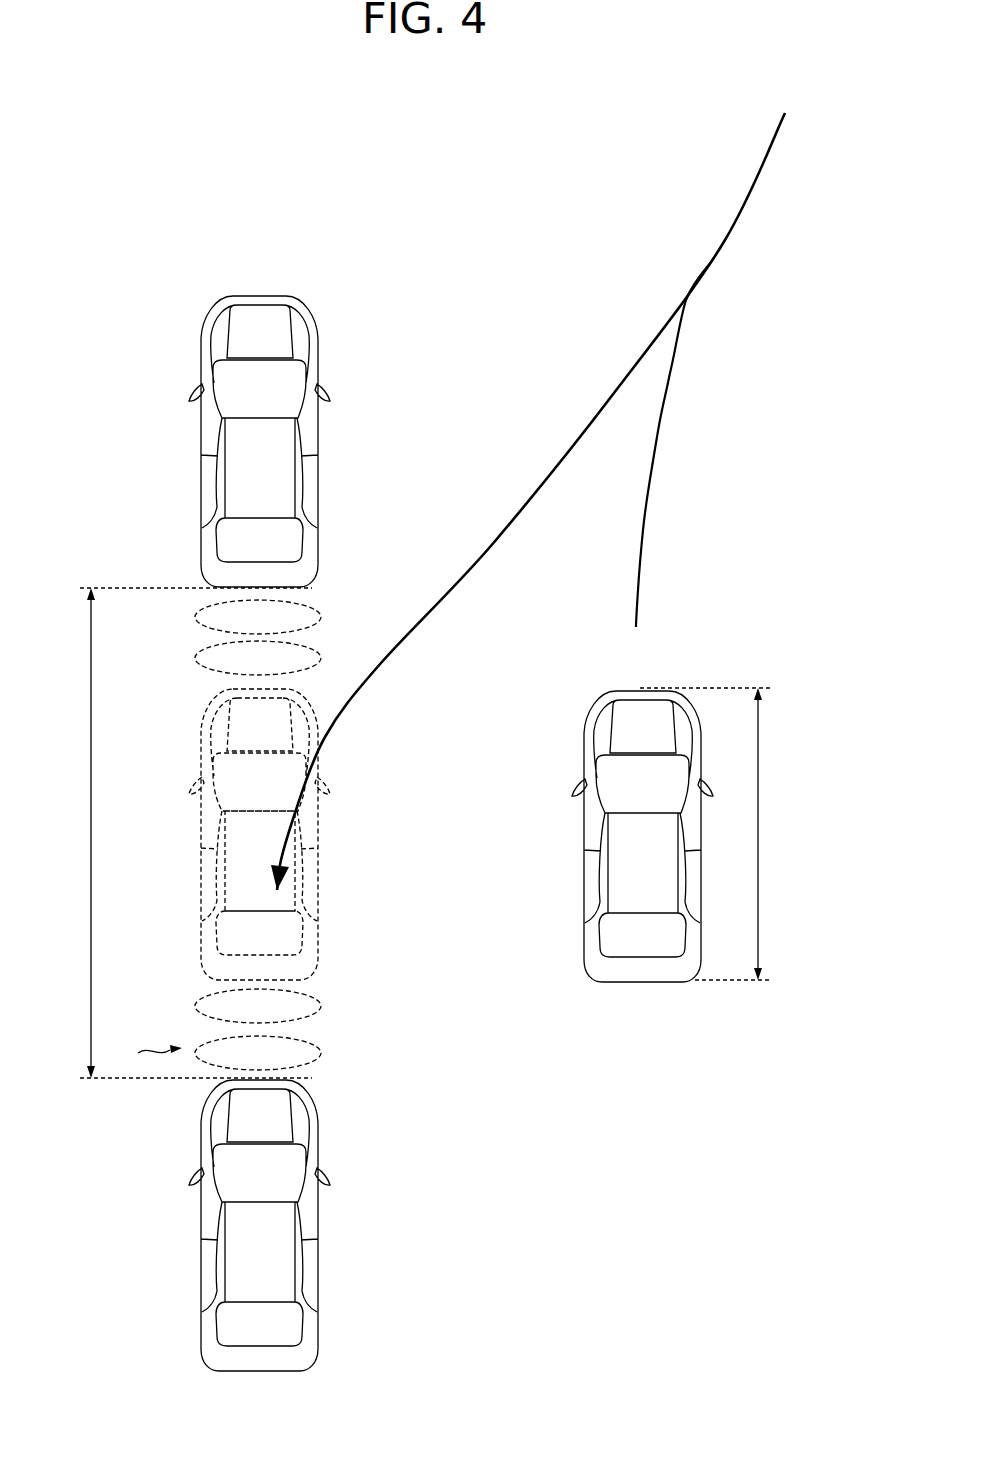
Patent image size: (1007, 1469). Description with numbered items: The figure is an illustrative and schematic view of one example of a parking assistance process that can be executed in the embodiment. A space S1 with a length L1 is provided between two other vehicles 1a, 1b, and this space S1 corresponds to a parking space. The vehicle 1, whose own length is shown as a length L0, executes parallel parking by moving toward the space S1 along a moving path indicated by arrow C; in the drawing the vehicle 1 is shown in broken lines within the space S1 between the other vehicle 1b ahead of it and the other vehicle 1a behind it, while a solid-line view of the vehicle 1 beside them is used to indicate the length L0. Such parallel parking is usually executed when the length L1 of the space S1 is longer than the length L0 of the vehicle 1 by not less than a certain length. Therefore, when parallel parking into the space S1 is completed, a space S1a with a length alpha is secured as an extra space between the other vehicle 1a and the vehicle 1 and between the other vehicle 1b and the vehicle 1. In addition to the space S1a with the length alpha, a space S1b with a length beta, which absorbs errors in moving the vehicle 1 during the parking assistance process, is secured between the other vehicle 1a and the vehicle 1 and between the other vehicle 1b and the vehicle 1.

The vehicle 1 is at (320, 862).
The other vehicle 1a is at (320, 1265).
The other vehicle 1b is at (320, 483).
The arrow indicating moving path C is at (654, 466).
The space S1 is at (142, 1055).
The space S1a is at (318, 606).
The space S1b is at (345, 634).
The length L1 is at (182, 833).
The length L0 is at (718, 834).